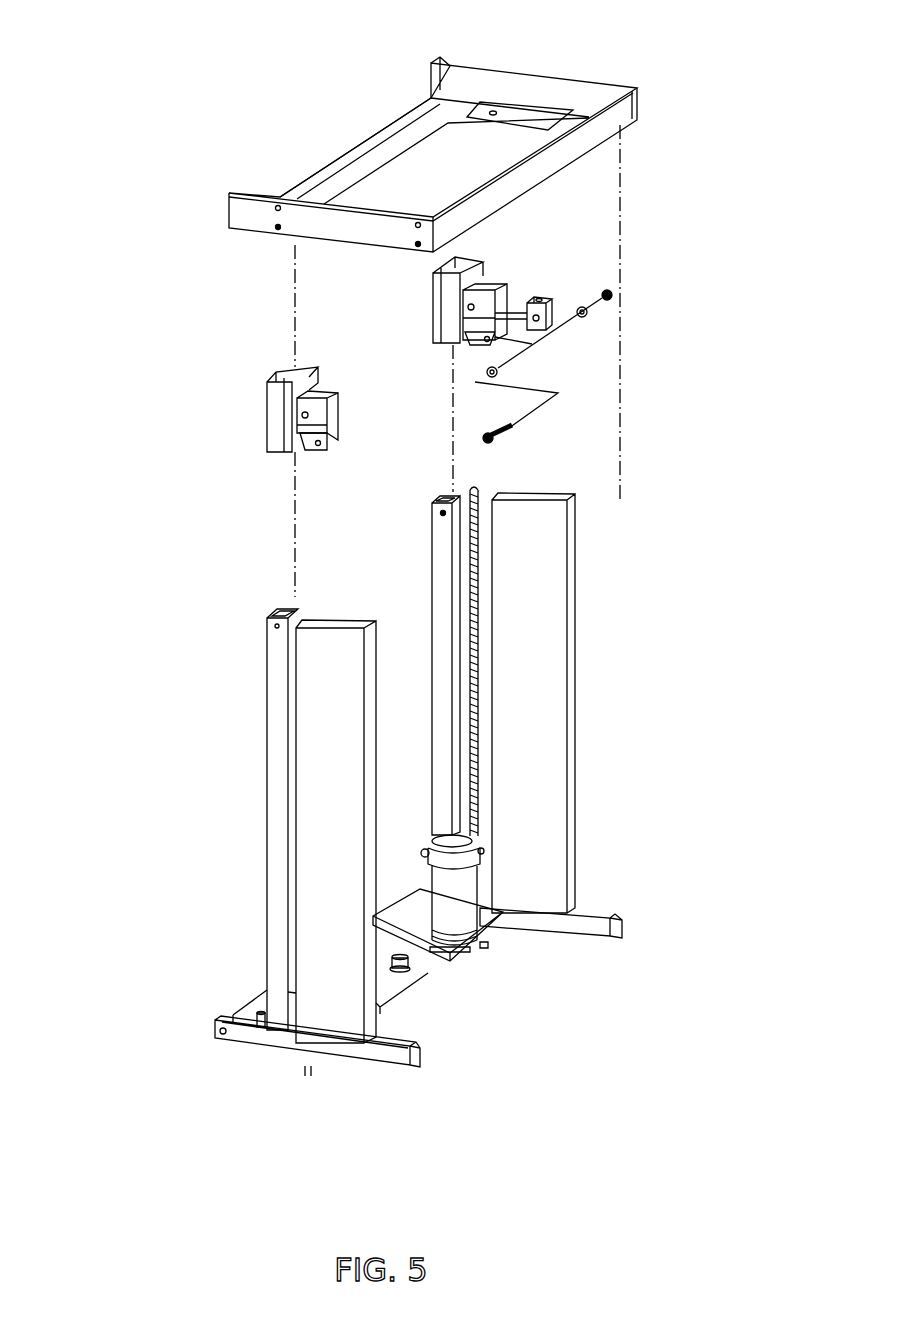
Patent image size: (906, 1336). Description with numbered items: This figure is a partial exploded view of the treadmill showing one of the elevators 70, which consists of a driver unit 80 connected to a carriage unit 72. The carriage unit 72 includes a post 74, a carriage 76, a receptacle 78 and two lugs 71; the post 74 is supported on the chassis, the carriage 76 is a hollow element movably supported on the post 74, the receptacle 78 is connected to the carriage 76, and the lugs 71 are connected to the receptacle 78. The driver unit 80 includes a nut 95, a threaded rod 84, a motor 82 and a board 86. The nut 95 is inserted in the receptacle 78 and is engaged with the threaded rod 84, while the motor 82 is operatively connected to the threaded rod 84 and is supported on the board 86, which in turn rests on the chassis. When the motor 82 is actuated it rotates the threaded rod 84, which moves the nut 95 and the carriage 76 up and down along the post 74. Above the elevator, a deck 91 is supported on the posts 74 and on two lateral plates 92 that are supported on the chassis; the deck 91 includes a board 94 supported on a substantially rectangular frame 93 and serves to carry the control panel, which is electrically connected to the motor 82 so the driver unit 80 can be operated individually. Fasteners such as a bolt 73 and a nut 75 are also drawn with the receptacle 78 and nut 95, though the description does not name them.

The elevator 70 is at (108, 38).
The lug 71 is at (307, 440).
The carriage unit 72 is at (258, 888).
The bolt 73 is at (511, 431).
The post 74 is at (273, 768).
The nut 75 is at (500, 372).
The carriage 76 is at (272, 420).
The receptacle 78 is at (327, 393).
The driver unit 80 is at (610, 982).
The motor 82 is at (457, 927).
The threaded rod 84 is at (478, 783).
The board 86 is at (497, 930).
The deck 91 is at (650, 91).
The lateral plate 92 is at (550, 615).
The frame 93 is at (517, 116).
The board 94 is at (600, 132).
The nut 95 is at (537, 300).